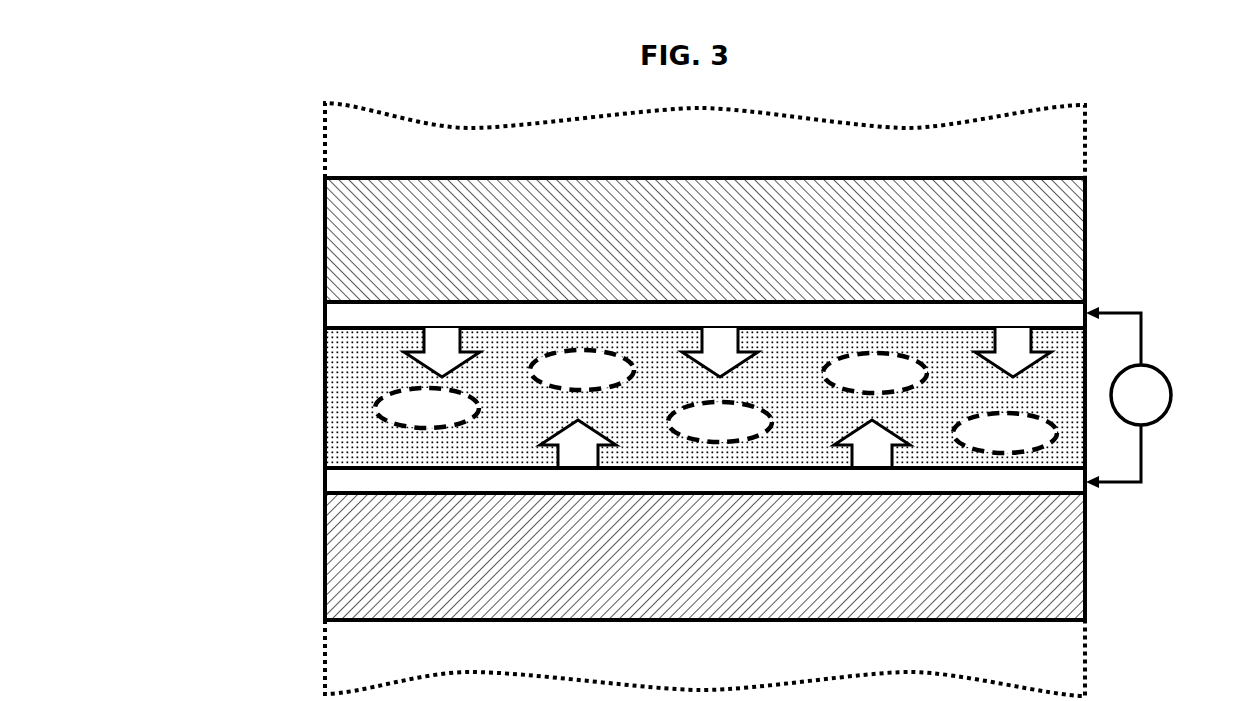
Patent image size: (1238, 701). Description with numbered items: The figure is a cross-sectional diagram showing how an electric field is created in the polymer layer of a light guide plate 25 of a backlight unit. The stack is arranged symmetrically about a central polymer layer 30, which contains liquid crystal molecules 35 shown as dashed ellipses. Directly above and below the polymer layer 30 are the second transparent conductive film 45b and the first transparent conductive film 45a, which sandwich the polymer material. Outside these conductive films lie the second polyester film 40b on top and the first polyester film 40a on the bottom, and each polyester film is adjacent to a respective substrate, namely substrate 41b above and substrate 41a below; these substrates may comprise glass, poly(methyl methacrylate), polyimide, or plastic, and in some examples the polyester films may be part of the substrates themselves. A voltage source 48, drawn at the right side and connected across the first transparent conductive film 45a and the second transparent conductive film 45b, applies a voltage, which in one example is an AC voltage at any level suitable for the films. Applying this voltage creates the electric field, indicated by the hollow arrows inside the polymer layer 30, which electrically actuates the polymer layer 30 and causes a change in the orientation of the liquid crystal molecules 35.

The light guide plate 25 is at (182, 213).
The substrate 41b is at (325, 141).
The second polyester film 40b is at (325, 236).
The second transparent conductive film 45b is at (325, 313).
The polymer layer 30 is at (325, 408).
The liquid crystal molecules 35 is at (911, 358).
The first transparent conductive film 45a is at (325, 482).
The first polyester film 40a is at (325, 568).
The substrate 41a is at (325, 653).
The voltage source 48 is at (1163, 373).